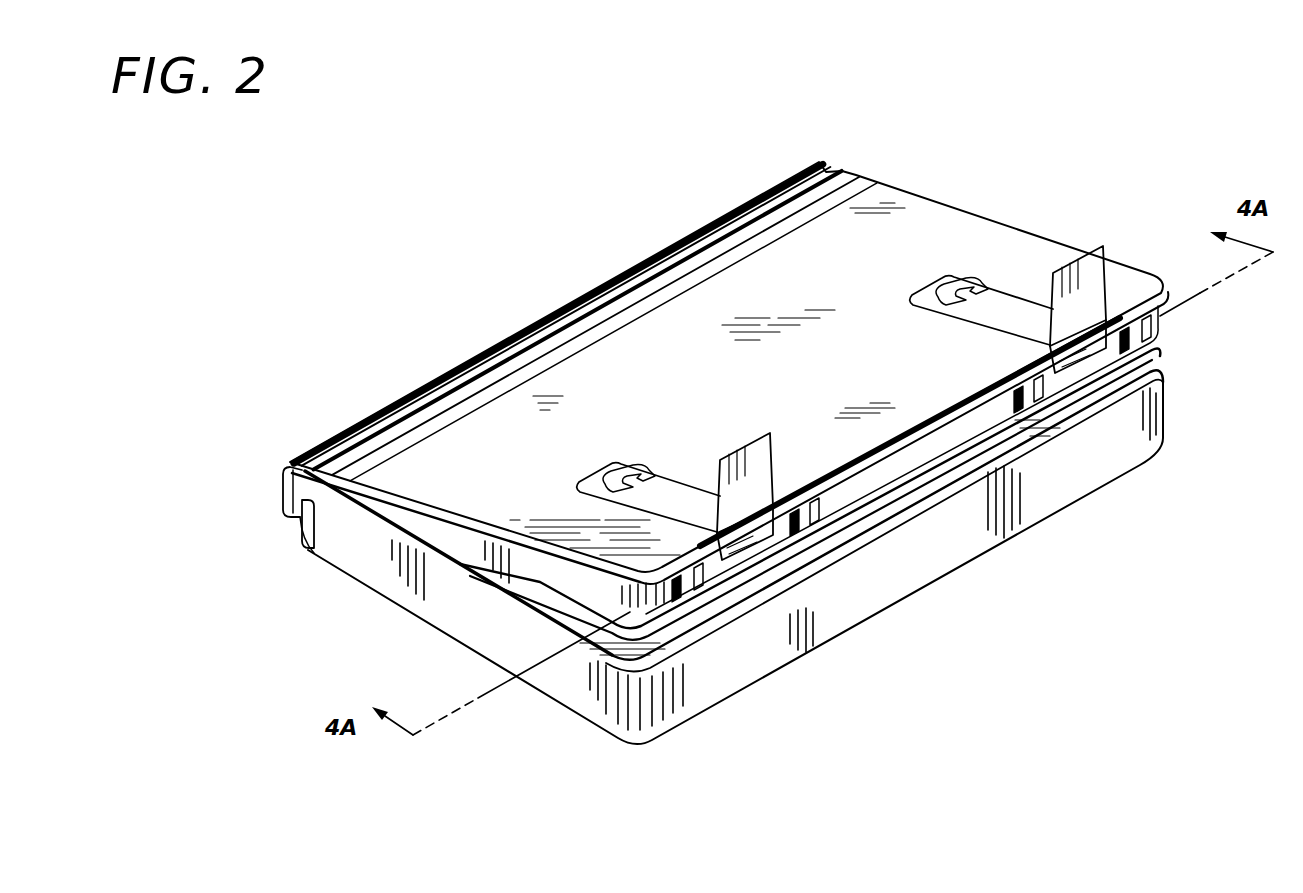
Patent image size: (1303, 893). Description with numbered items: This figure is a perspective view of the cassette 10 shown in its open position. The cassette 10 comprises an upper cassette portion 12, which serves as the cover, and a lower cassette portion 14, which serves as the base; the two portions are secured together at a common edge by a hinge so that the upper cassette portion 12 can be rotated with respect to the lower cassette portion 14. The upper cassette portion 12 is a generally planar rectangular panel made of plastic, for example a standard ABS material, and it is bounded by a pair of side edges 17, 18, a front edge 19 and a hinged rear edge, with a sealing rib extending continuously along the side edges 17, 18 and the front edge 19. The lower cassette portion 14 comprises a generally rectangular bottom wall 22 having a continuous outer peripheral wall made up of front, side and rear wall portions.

The cassette 10 is at (543, 236).
The upper cassette portion 12 is at (700, 408).
The lower cassette portion 14 is at (1097, 470).
The side edge 17 is at (437, 511).
The side edge 18 is at (985, 221).
The front edge 19 is at (808, 482).
The bottom wall 22 is at (838, 537).